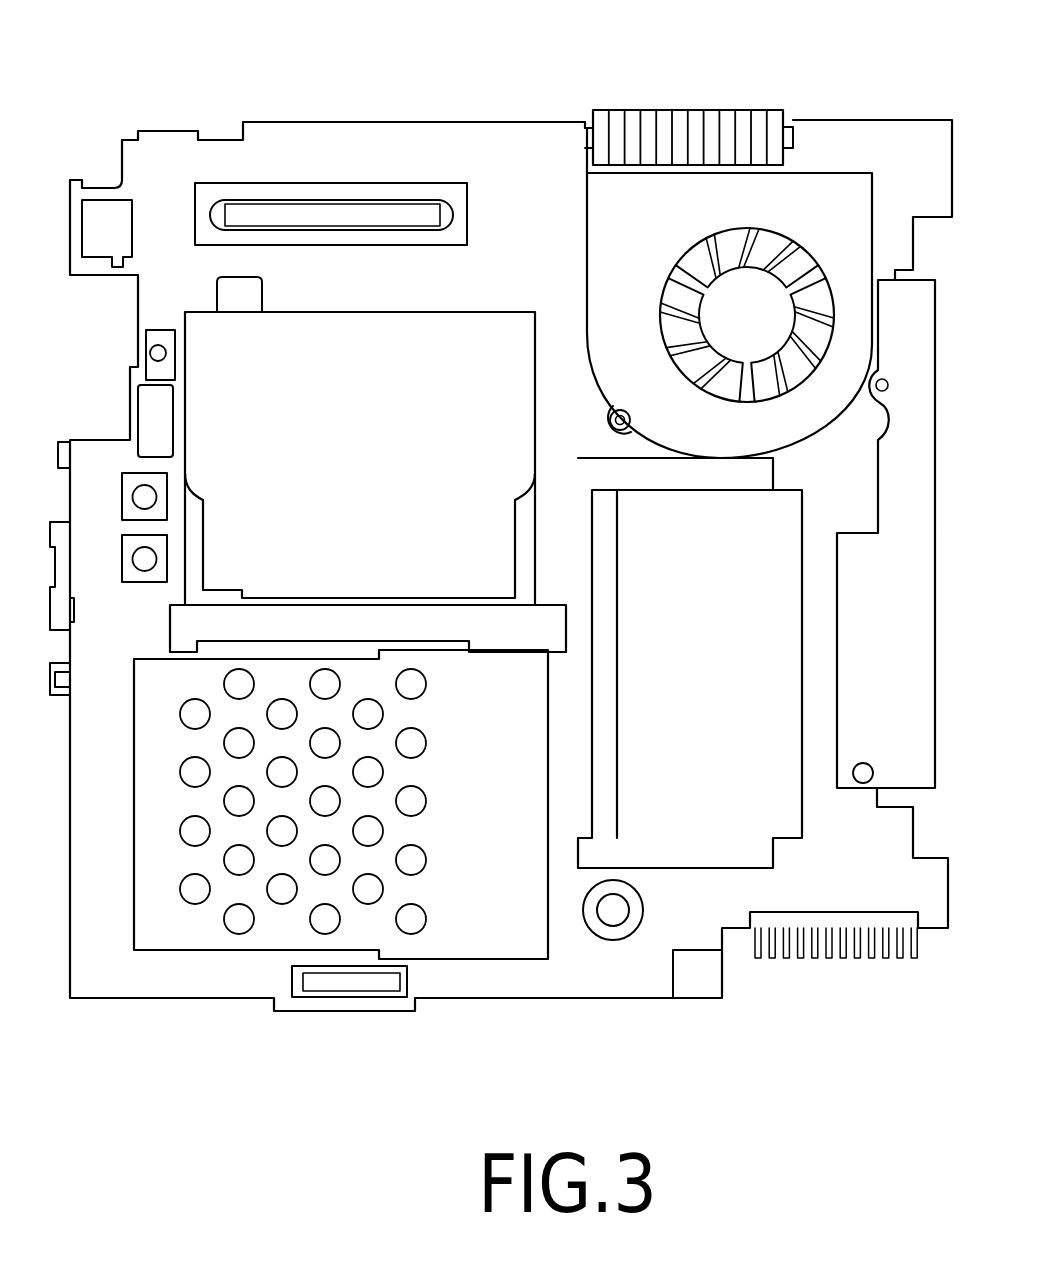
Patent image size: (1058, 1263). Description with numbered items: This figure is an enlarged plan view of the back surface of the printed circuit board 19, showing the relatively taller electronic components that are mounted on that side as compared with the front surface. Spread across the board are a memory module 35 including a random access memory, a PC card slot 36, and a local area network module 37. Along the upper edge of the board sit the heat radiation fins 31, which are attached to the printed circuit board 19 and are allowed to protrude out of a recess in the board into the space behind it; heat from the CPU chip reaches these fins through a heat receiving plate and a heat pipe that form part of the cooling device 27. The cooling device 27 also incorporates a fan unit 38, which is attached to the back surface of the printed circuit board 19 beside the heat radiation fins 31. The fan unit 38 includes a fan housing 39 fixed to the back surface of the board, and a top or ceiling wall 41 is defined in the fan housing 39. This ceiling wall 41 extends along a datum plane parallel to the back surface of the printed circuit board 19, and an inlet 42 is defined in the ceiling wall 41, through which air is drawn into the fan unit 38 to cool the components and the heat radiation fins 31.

The printed circuit board 19 is at (312, 132).
The cooling device 27 is at (630, 98).
The heat radiation fins 31 is at (785, 118).
The memory module 35 is at (793, 808).
The PC card slot 36 is at (137, 705).
The local area network module 37 is at (495, 320).
The fan unit 38 is at (866, 167).
The fan housing 39 is at (588, 227).
The ceiling wall 41 is at (703, 435).
The inlet 42 is at (727, 250).